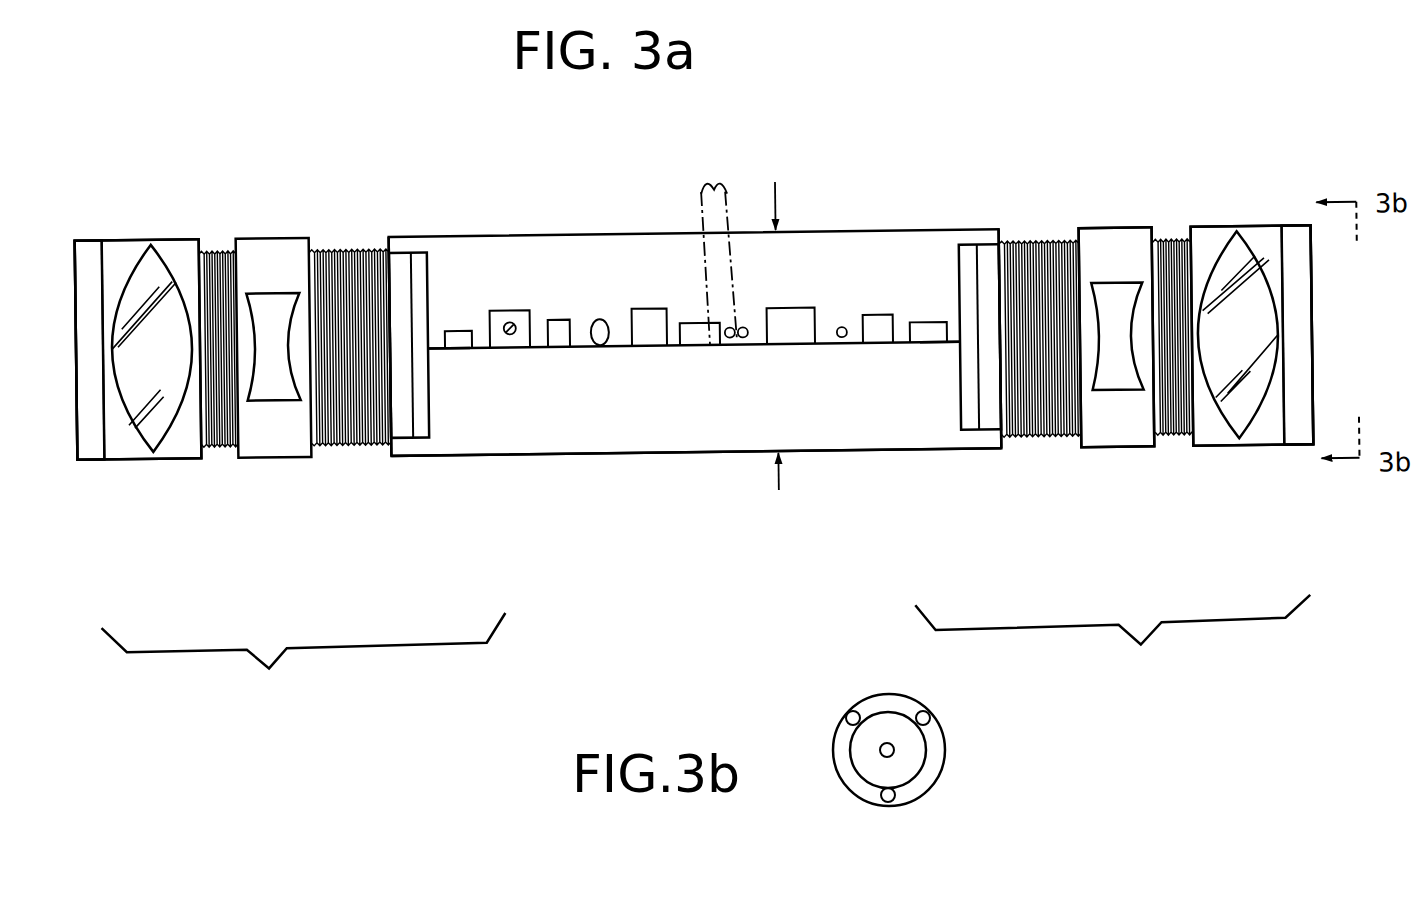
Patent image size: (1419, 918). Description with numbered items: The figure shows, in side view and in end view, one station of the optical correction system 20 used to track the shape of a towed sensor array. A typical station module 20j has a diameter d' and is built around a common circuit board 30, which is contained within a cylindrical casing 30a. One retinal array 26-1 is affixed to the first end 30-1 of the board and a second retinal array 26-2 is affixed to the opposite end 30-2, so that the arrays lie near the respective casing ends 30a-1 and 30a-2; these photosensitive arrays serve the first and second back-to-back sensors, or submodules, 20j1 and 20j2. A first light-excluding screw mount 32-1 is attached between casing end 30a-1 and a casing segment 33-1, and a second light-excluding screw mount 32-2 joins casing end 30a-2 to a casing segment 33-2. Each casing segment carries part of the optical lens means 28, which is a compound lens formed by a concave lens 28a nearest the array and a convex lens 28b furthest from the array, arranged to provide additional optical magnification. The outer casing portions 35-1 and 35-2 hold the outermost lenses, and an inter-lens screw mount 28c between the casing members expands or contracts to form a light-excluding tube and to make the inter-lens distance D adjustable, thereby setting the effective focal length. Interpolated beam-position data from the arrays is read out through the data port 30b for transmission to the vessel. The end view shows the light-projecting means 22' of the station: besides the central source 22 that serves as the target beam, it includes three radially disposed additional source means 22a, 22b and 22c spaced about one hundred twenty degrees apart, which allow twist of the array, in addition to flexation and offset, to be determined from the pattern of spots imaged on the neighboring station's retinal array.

In FIG. 3a, the optical correction system 20 is at (217, 529).
In FIG. 3a, the station module 20j is at (597, 477).
In FIG. 3a, the first sensor submodule 20j1 is at (303, 660).
In FIG. 3a, the second sensor submodule 20j2 is at (1113, 640).
In FIG. 3b, the central light source 22 is at (935, 750).
In FIG. 3b, the additional source means 22a is at (897, 797).
In FIG. 3b, the additional source means 22b is at (932, 710).
In FIG. 3b, the additional source means 22c is at (850, 712).
In FIG. 3a, the multi-emitter source means 22' is at (702, 376).
In FIG. 3b, the multi-emitter source means 22' is at (849, 767).
In FIG. 3a, the first retinal array 26-1 is at (403, 443).
In FIG. 3a, the second retinal array 26-2 is at (985, 441).
In FIG. 3a, the optical lens means 28 is at (1105, 528).
In FIG. 3a, the concave lens 28a is at (153, 451).
In FIG. 3a, the convex lens 28b is at (270, 395).
In FIG. 3a, the inter-lens screw mount 28c is at (215, 245).
In FIG. 3a, the common circuit board 30 is at (727, 350).
In FIG. 3a, the first end of circuit board 30-1 is at (428, 347).
In FIG. 3a, the second end of circuit board 30-2 is at (960, 351).
In FIG. 3a, the cylindrical casing 30a is at (650, 233).
In FIG. 3a, the first casing end 30a-1 is at (392, 233).
In FIG. 3a, the second casing end 30a-2 is at (960, 233).
In FIG. 3a, the data port 30b is at (737, 265).
In FIG. 3a, the first light-excluding screw mount 32-1 is at (360, 245).
In FIG. 3a, the second light-excluding screw mount 32-2 is at (1043, 245).
In FIG. 3a, the first casing segment 33-1 is at (290, 233).
In FIG. 3a, the second casing segment 33-2 is at (1127, 233).
In FIG. 3a, the first outer casing portion 35-1 is at (148, 233).
In FIG. 3a, the second outer casing portion 35-2 is at (1260, 233).
In FIG. 3a, the module diameter d' is at (799, 354).
In FIG. 3a, the inter-lens distance D is at (1238, 379).